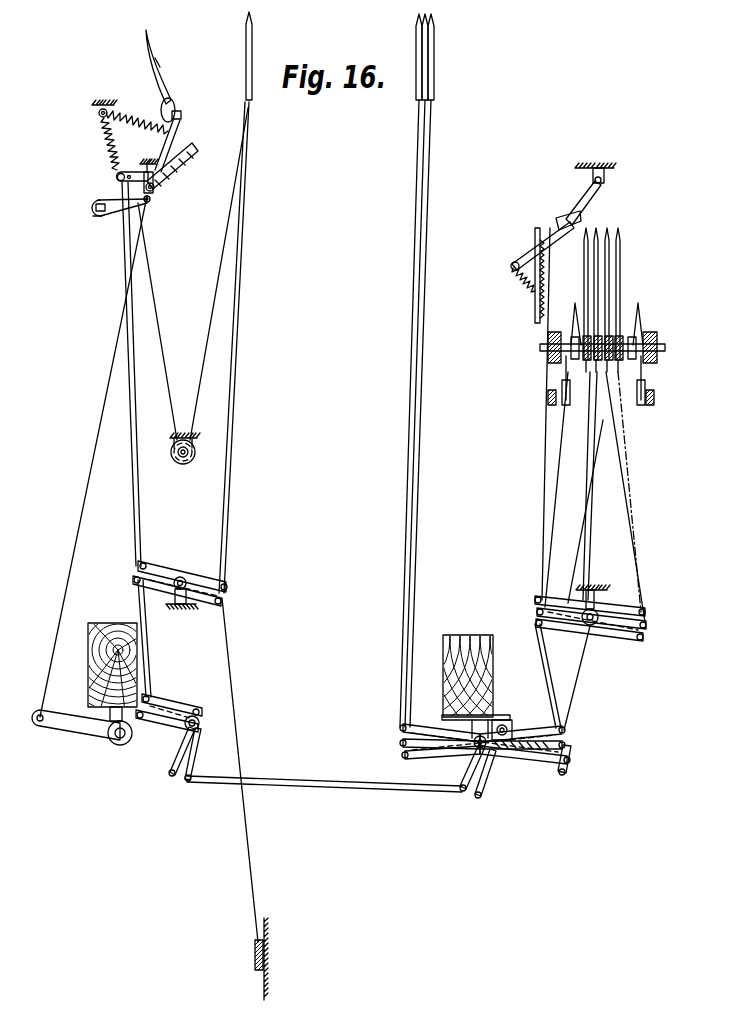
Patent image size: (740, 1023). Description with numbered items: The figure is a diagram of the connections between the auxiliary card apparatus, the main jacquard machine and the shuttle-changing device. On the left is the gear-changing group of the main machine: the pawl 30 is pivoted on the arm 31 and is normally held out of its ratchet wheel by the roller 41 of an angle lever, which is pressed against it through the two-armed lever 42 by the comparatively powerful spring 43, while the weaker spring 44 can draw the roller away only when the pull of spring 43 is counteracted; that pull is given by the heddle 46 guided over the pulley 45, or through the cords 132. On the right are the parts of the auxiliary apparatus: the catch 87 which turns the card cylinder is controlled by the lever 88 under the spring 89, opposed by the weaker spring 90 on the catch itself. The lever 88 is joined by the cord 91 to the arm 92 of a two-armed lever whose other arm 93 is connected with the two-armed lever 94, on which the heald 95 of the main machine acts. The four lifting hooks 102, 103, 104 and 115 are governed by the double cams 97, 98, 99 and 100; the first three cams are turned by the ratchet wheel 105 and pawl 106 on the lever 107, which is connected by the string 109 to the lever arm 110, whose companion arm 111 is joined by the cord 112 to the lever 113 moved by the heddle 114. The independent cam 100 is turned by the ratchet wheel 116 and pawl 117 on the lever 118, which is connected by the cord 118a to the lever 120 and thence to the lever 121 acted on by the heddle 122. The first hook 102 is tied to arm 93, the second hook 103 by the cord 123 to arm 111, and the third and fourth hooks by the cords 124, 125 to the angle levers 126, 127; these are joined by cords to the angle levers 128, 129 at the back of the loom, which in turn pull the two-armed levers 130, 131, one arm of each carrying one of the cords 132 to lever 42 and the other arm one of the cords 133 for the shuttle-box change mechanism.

The pawl 30 is at (176, 90).
The arm 31 is at (132, 205).
The roller 41 is at (178, 112).
The two-armed lever 42 is at (134, 172).
The spring 43 is at (108, 150).
The spring 44 is at (136, 124).
The pulley 45 is at (191, 464).
The heddle 46 is at (158, 338).
The catch 87 is at (586, 201).
The lever 88 is at (522, 260).
The spring 89 is at (519, 278).
The spring 90 is at (548, 264).
The cord 91 is at (547, 470).
The lever arm 92 is at (558, 606).
The lever arm 93 is at (628, 638).
The two-armed lever 94 is at (549, 730).
The heald 95 is at (420, 510).
The double cam 97 is at (575, 330).
The double cam 98 is at (615, 328).
The double cam 99 is at (631, 340).
The double cam 100 is at (640, 353).
The lifting hook 102 is at (588, 284).
The lifting hook 103 is at (598, 242).
The lifting hook 104 is at (611, 258).
The ratchet wheel 105 is at (566, 358).
The pawl 106 is at (568, 340).
The lever 107 is at (553, 396).
The string 109 is at (566, 472).
The lever arm 110 is at (548, 611).
The lever arm 111 is at (648, 621).
The cord 112 is at (543, 646).
The lever 113 is at (566, 740).
The heddle 114 is at (418, 454).
The lifting hook 115 is at (622, 264).
The ratchet wheel 116 is at (660, 345).
The pawl 117 is at (646, 332).
The lever 118 is at (650, 397).
The cord 118a is at (576, 537).
The lever 120 is at (560, 629).
The lever 121 is at (571, 753).
The heddle 122 is at (413, 338).
The cord 123 is at (632, 488).
The cord 124 is at (591, 500).
The cord 125 is at (604, 492).
The angle lever 126 is at (572, 762).
The angle lever 127 is at (474, 768).
The angle lever 128 is at (170, 776).
The angle lever 129 is at (194, 770).
The two-armed lever 130 is at (181, 576).
The two-armed lever 131 is at (165, 602).
The cords 132 is at (132, 474).
The cords 133 is at (234, 698).